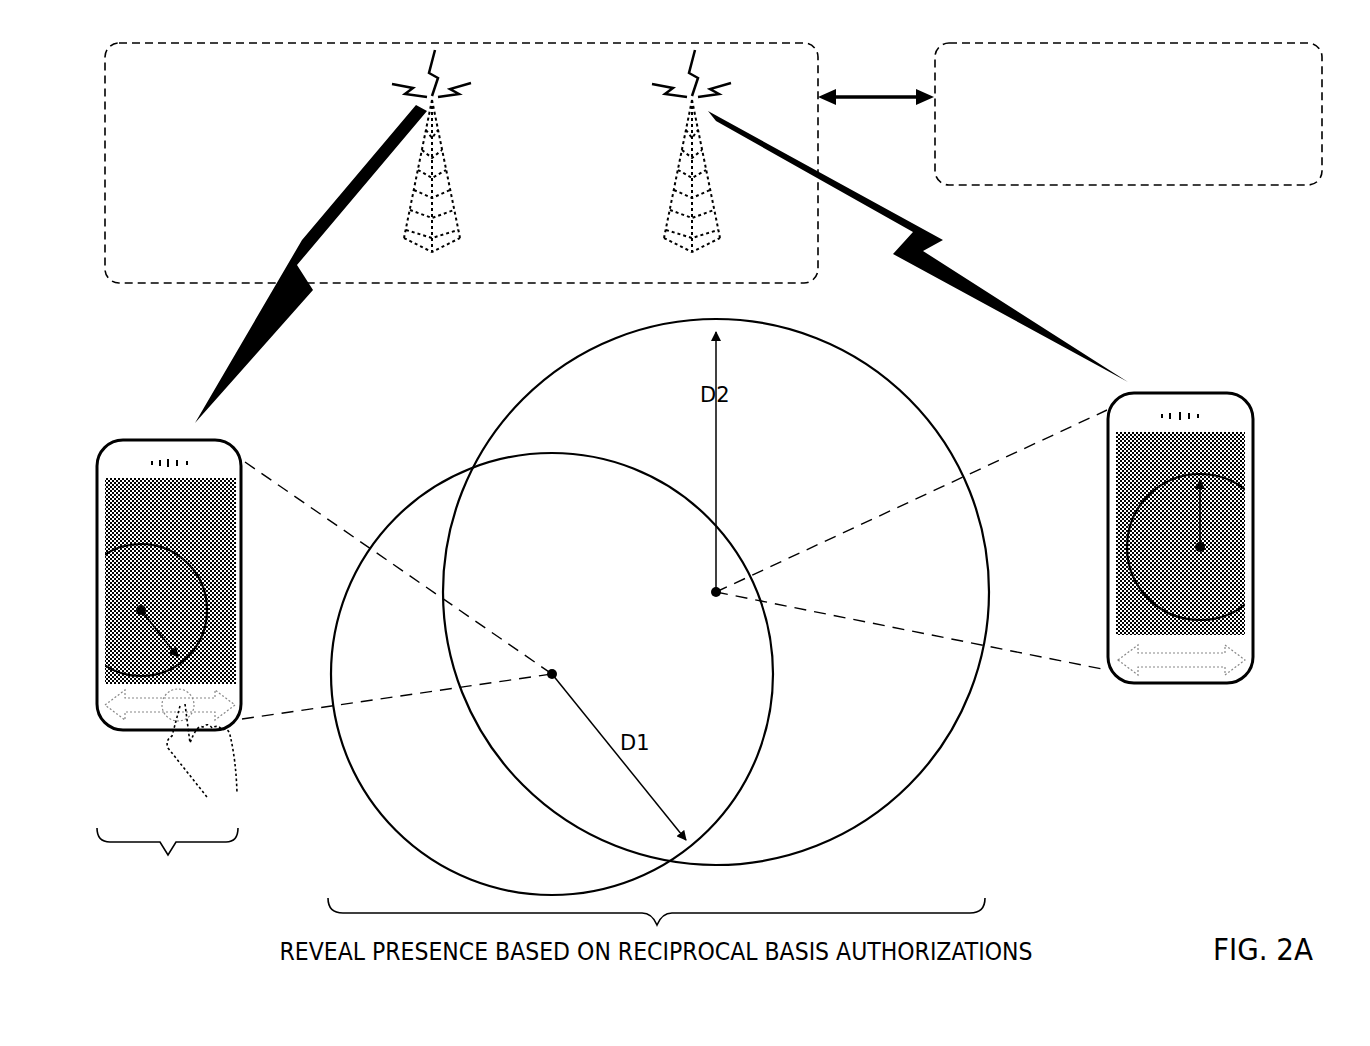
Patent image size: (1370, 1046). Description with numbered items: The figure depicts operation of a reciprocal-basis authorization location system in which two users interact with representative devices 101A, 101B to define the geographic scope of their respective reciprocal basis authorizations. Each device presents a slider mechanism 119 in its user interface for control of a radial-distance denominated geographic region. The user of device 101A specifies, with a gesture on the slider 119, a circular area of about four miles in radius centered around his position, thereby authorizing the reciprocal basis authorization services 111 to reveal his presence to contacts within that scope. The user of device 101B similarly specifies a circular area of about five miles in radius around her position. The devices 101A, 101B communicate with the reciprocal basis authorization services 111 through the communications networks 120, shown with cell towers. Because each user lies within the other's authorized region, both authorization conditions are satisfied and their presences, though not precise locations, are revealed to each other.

The communications networks 120 is at (616, 233).
The reciprocal basis authorization services 111 is at (1128, 114).
The device 101A is at (243, 460).
The device 101B is at (1250, 400).
The slider mechanism 119 is at (1255, 733).